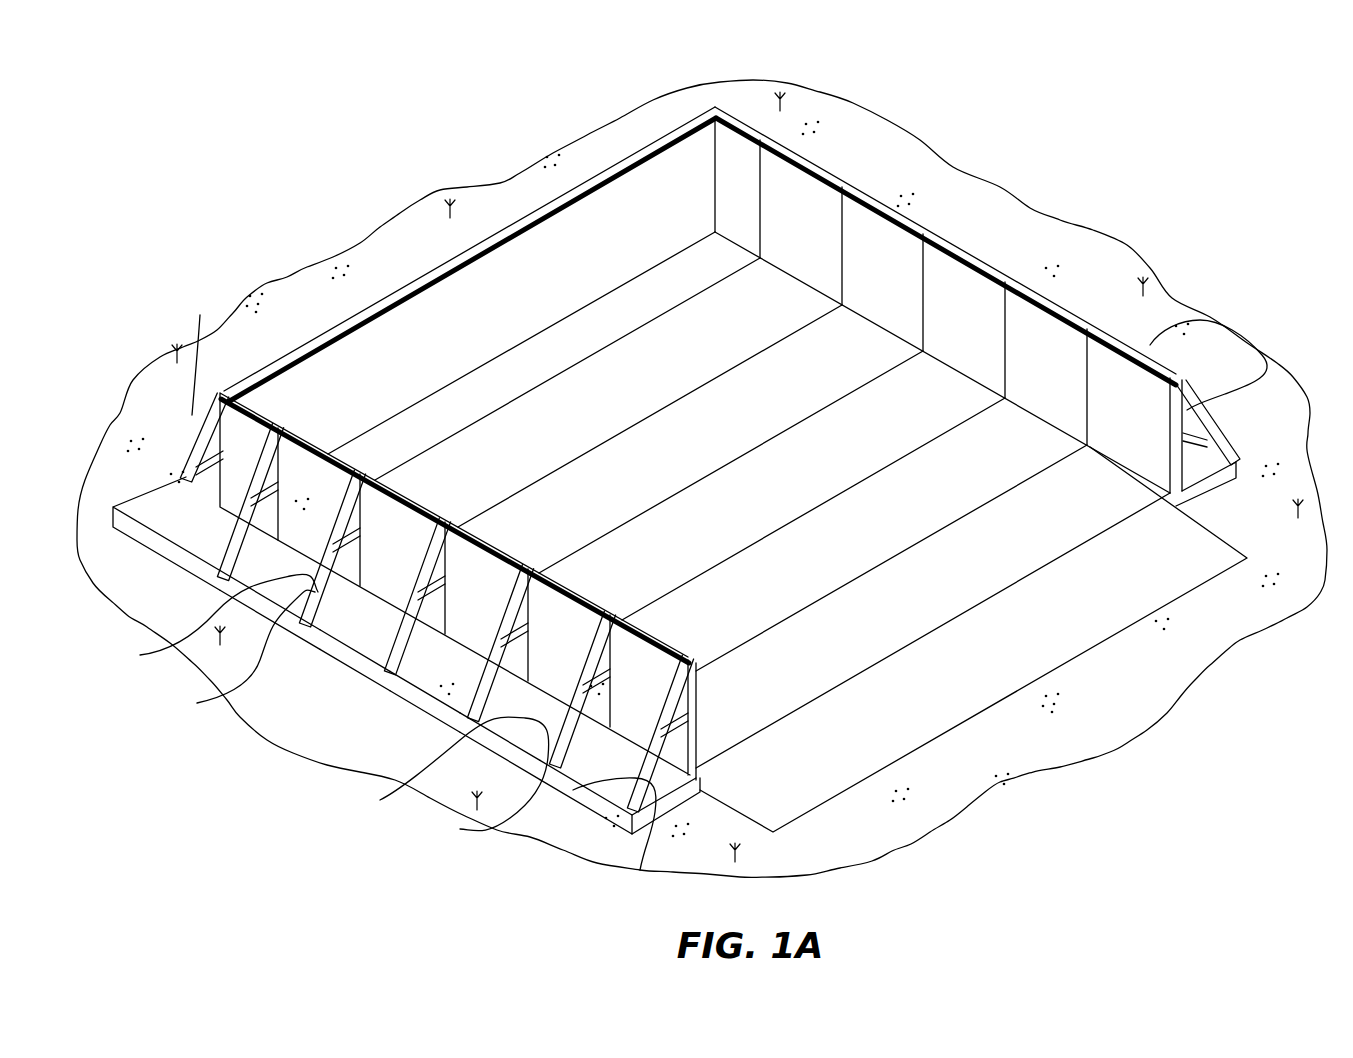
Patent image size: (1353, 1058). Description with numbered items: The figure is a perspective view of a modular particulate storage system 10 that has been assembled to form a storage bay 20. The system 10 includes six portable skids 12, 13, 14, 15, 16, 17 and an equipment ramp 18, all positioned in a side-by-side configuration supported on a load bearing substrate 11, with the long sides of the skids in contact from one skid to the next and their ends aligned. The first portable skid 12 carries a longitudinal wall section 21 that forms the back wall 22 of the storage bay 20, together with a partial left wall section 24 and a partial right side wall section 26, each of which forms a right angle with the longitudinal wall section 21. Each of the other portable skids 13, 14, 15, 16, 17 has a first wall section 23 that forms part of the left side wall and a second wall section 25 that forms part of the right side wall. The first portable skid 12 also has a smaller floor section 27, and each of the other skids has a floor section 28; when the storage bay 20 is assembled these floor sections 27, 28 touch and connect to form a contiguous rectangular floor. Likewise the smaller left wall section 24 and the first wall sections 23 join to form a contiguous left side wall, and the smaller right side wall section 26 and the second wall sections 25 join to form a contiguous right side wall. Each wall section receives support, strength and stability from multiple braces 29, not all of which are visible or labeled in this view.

The modular particulate storage system 10 is at (447, 137).
The load bearing substrate 11 is at (139, 425).
The first portable skid 12 is at (180, 557).
The portable skid 13 is at (265, 603).
The portable skid 14 is at (343, 650).
The portable skid 15 is at (420, 695).
The portable skid 16 is at (495, 750).
The portable skid 17 is at (573, 790).
The equipment ramp 18 is at (700, 797).
The storage bay 20 is at (1118, 653).
The longitudinal wall section 21 is at (410, 275).
The back wall 22 is at (509, 300).
The first wall section 23 is at (362, 470).
The partial left wall section 24 is at (283, 418).
The second wall section 25 is at (823, 168).
The partial right side wall section 26 is at (752, 103).
The floor section 27 is at (574, 337).
The floor section 28 is at (635, 374).
The brace 29 is at (1266, 334).